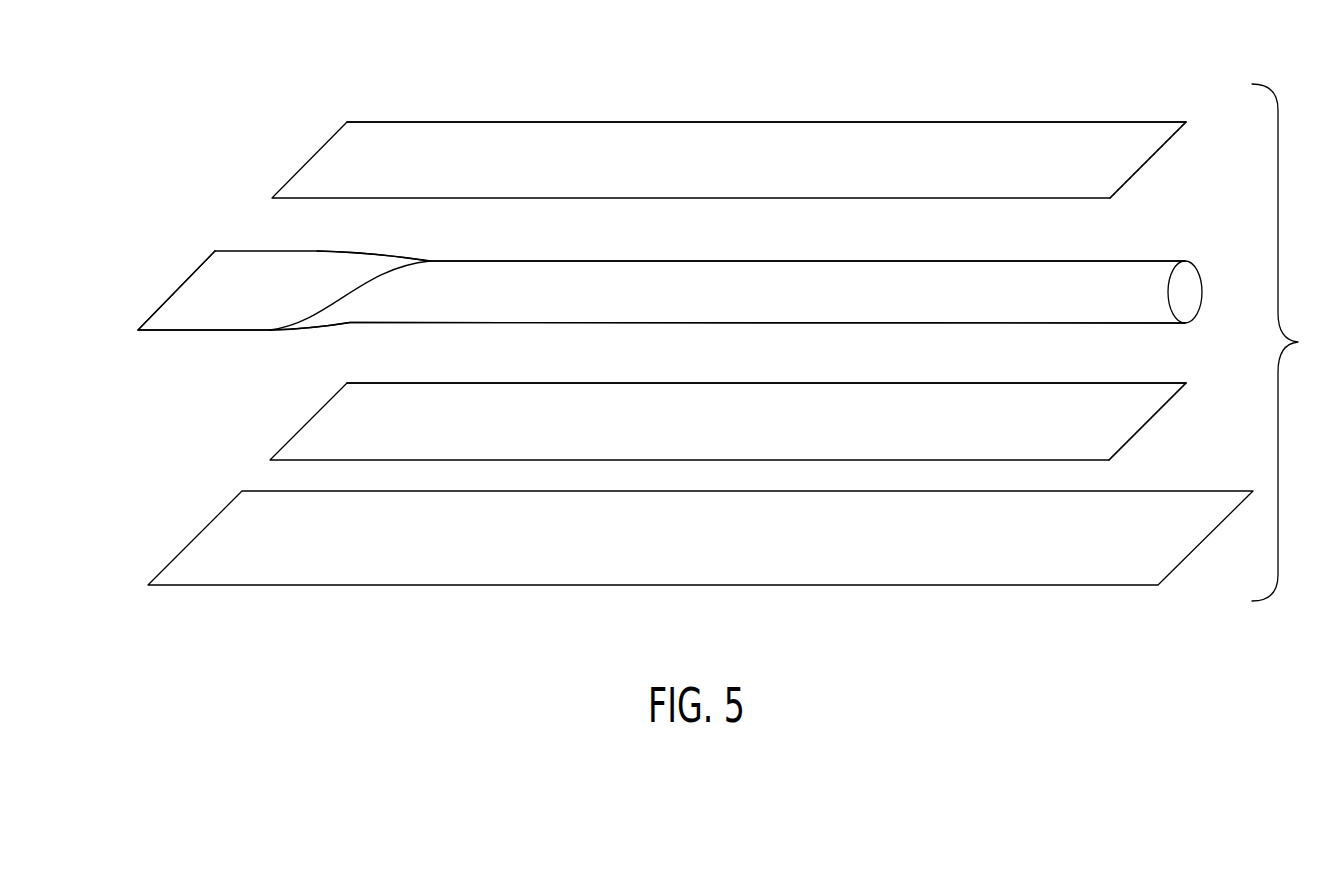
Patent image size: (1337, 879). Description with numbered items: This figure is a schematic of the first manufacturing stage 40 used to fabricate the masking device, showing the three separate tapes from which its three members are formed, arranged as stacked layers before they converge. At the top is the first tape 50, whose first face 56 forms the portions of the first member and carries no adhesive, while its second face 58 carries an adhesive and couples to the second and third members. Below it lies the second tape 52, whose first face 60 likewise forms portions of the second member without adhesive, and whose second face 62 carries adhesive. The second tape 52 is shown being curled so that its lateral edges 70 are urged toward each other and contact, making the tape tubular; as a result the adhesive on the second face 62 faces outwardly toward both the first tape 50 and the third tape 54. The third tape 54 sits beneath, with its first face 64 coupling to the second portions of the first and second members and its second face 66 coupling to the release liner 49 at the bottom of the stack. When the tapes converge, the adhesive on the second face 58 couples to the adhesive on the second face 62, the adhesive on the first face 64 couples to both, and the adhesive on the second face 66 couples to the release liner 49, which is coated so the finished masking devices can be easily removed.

The first manufacturing stage 40 is at (1298, 342).
The release liner 49 is at (198, 538).
The first tape 50 is at (309, 160).
The second tape 52 is at (174, 292).
The third tape 54 is at (309, 420).
The first face 56 is at (765, 172).
The second face 58 is at (1102, 198).
The first face 60 is at (258, 300).
The second face 62 is at (765, 306).
The first face 64 is at (765, 436).
The second face 66 is at (1101, 460).
The lateral edges 70 is at (267, 251).